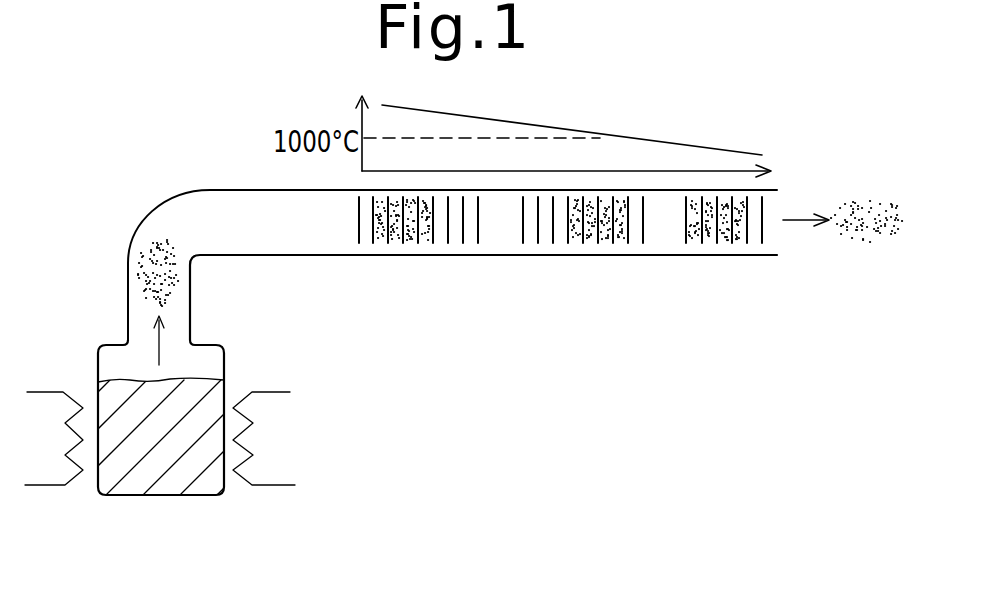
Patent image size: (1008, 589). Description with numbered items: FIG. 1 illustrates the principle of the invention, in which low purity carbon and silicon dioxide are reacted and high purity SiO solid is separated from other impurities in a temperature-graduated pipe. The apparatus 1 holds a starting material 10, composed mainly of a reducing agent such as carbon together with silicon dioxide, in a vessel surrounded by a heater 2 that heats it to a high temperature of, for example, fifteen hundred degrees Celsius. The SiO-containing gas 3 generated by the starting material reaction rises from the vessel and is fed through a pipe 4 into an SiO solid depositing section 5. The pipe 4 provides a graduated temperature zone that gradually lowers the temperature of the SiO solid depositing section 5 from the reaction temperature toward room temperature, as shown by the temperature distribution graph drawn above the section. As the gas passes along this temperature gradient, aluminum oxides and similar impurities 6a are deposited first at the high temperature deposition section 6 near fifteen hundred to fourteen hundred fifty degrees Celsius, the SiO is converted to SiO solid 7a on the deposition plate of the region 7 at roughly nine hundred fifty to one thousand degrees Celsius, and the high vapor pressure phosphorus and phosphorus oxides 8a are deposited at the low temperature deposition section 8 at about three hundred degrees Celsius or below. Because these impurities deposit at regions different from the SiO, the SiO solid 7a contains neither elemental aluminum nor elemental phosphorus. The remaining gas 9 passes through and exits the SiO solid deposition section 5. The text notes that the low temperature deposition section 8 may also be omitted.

The production apparatus 1 is at (80, 351).
The heater 2 is at (277, 430).
The SiO-containing gas 3 is at (170, 265).
The pipe 4 is at (238, 203).
The SiO solid depositing section 5 is at (519, 260).
The high temperature deposition section 6 is at (397, 251).
The aluminum oxides 6a is at (403, 251).
The SiO solid deposition section 7 is at (587, 251).
The SiO solid 7a is at (605, 251).
The low temperature deposition section 8 is at (723, 251).
The phosphorus and phosphorus oxides 8a is at (740, 251).
The gas 9 is at (863, 231).
The starting material 10 is at (175, 484).